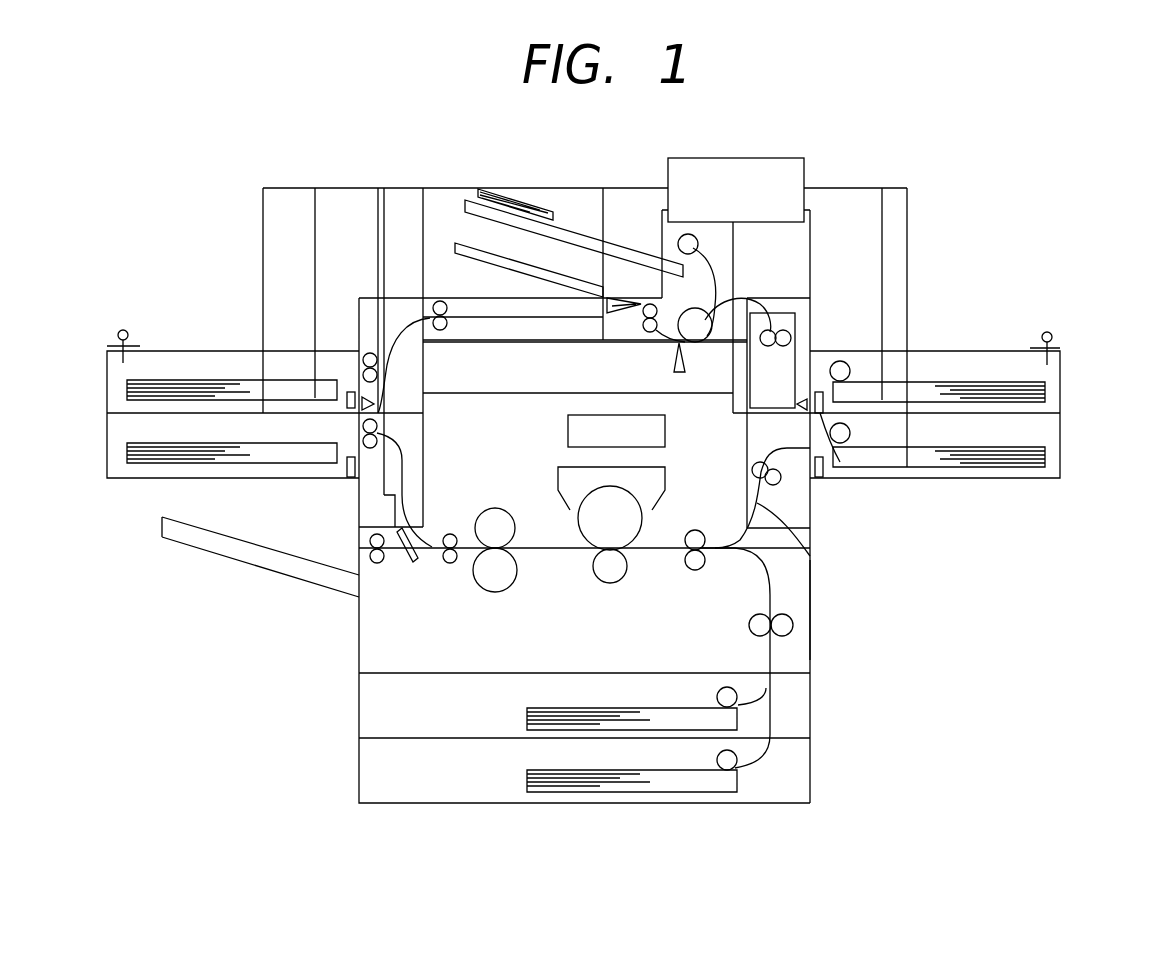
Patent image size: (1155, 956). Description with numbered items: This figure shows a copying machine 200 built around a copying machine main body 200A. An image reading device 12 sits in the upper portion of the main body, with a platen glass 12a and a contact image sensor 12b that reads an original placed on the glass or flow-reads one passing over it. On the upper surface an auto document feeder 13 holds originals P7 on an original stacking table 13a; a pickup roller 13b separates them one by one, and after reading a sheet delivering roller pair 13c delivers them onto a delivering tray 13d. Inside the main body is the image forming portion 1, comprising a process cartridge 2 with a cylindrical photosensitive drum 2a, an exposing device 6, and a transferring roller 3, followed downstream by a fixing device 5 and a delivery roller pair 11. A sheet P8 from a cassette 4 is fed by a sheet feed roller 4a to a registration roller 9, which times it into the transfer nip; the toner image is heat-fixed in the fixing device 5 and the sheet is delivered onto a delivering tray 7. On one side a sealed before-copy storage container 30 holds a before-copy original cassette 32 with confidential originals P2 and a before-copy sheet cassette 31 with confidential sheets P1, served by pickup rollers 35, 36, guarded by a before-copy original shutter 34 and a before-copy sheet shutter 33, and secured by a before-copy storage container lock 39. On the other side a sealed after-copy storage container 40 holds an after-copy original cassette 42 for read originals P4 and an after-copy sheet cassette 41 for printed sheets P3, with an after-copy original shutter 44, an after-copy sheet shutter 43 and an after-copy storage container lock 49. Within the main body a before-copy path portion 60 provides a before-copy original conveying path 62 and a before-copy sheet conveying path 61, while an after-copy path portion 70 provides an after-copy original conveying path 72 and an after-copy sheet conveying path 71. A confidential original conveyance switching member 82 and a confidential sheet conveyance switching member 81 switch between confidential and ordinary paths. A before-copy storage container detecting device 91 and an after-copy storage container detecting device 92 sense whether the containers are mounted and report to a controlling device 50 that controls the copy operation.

The image forming portion 1 is at (546, 473).
The process cartridge 2 is at (558, 499).
The photosensitive drum 2a is at (638, 522).
The transferring roller 3 is at (612, 580).
The cassette 4 is at (795, 718).
The sheet feed roller 4a is at (738, 700).
The fixing device 5 is at (496, 580).
The exposing device 6 is at (665, 442).
The delivering tray 7 is at (250, 563).
The registration roller 9 is at (700, 572).
The delivery roller pair 11 is at (372, 565).
The image reading device 12 is at (492, 364).
The platen glass 12a is at (628, 342).
The contact image sensor 12b is at (685, 372).
The auto document feeder 13 is at (707, 236).
The original stacking table 13a is at (502, 193).
The pickup roller 13b is at (713, 258).
The sheet delivering roller pair 13c is at (646, 305).
The delivering tray 13d is at (457, 242).
The before-copy storage container 30 is at (1003, 341).
The before-copy sheet cassette 31 is at (1052, 441).
The before-copy original cassette 32 is at (1052, 373).
The before-copy sheet shutter 33 is at (818, 477).
The before-copy original shutter 34 is at (818, 413).
The pickup roller 35 is at (850, 370).
The pickup roller 36 is at (848, 435).
The before-copy storage container lock 39 is at (1052, 336).
The after-copy storage container 40 is at (184, 334).
The after-copy sheet cassette 41 is at (118, 432).
The after-copy original cassette 42 is at (112, 365).
The after-copy sheet shutter 43 is at (353, 478).
The after-copy original shutter 44 is at (352, 390).
The after-copy storage container lock 49 is at (123, 330).
The controlling device 50 is at (790, 158).
The before-copy path portion 60 is at (824, 298).
The before-copy sheet conveying path 61 is at (810, 553).
The before-copy original conveying path 62 is at (790, 358).
The after-copy path portion 70 is at (404, 286).
The after-copy sheet conveying path 71 is at (398, 466).
The after-copy original conveying path 72 is at (395, 327).
The confidential sheet conveyance switching member 81 is at (404, 564).
The confidential original conveyance switching member 82 is at (612, 299).
The before-copy storage container detecting device 91 is at (823, 470).
The after-copy storage container detecting device 92 is at (357, 407).
The copying machine 200 is at (826, 647).
The copying machine main body 200A is at (812, 607).
The before-copy sheets P1 is at (1048, 460).
The before-copy originals P2 is at (1048, 392).
The after-copy sheets P3 is at (130, 465).
The after-copy originals P4 is at (128, 393).
The originals P7 is at (502, 190).
The sheet P8 is at (527, 727).